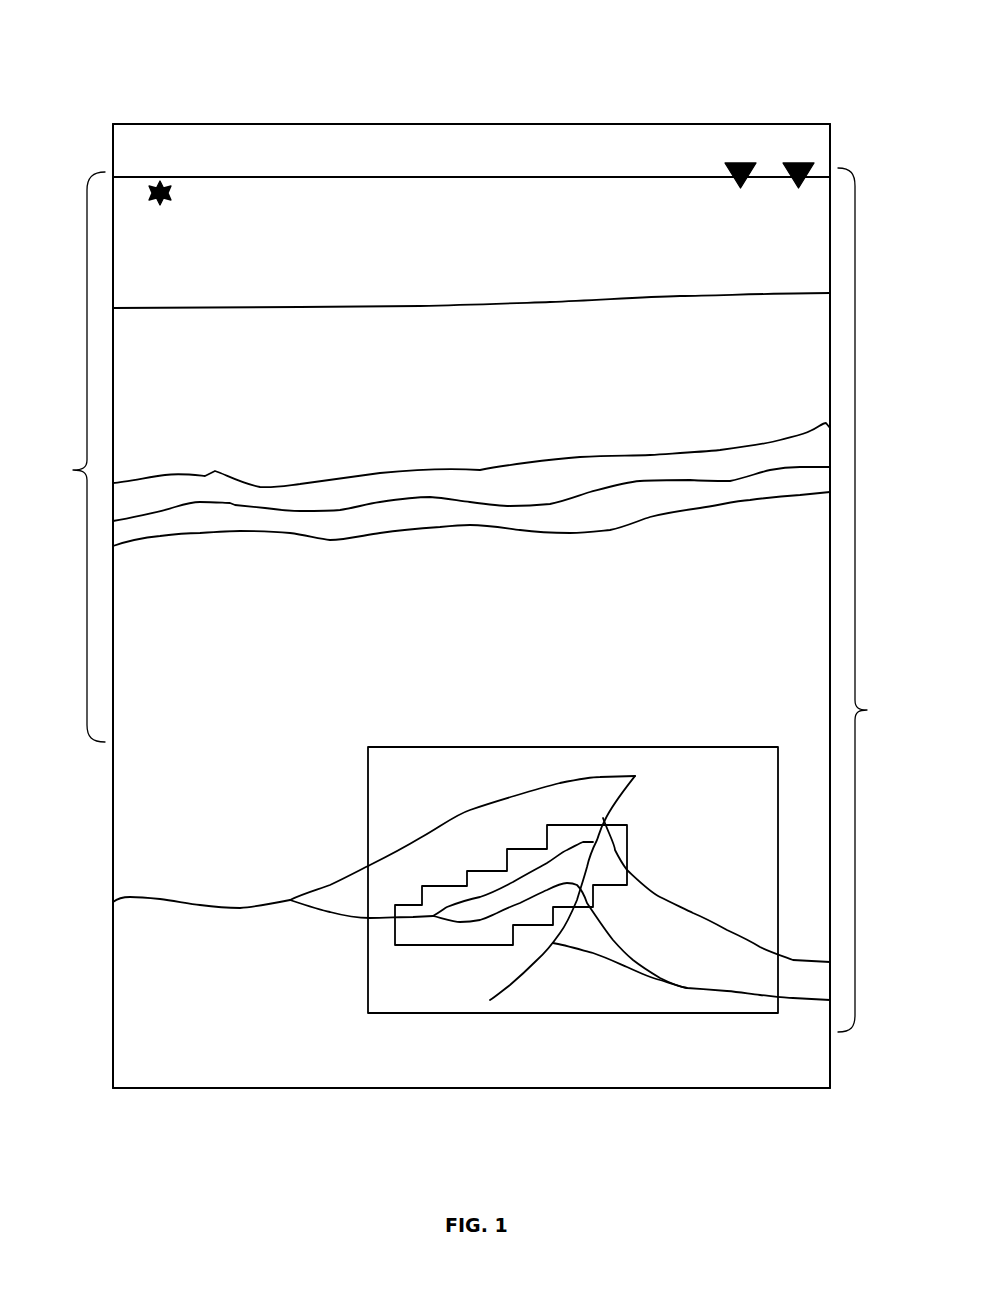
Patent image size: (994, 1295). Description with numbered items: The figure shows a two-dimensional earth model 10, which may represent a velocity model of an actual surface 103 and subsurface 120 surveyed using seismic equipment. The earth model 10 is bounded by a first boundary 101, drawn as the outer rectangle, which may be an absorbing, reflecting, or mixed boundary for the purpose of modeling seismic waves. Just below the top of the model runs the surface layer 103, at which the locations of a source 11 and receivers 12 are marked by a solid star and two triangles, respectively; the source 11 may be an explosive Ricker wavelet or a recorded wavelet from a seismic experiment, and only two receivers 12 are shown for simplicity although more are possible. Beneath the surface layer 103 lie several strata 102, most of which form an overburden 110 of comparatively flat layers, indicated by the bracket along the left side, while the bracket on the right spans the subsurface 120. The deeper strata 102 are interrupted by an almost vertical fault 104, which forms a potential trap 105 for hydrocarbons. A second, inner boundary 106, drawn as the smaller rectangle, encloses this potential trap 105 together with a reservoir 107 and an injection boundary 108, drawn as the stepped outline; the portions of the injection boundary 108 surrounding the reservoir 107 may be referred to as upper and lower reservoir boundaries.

The two-dimensional earth model 10 is at (855, 43).
The first boundary 101 is at (333, 123).
The strata 102 is at (323, 308).
The surface layer 103 is at (420, 178).
The source 11 is at (168, 203).
The receivers 12 is at (768, 188).
The overburden 110 is at (66, 457).
The subsurface 120 is at (874, 600).
The second (inner) boundary 106 is at (473, 746).
The reservoir 107 is at (495, 883).
The injection boundary 108 is at (447, 946).
The potential trap 105 is at (573, 864).
The fault 104 is at (508, 986).